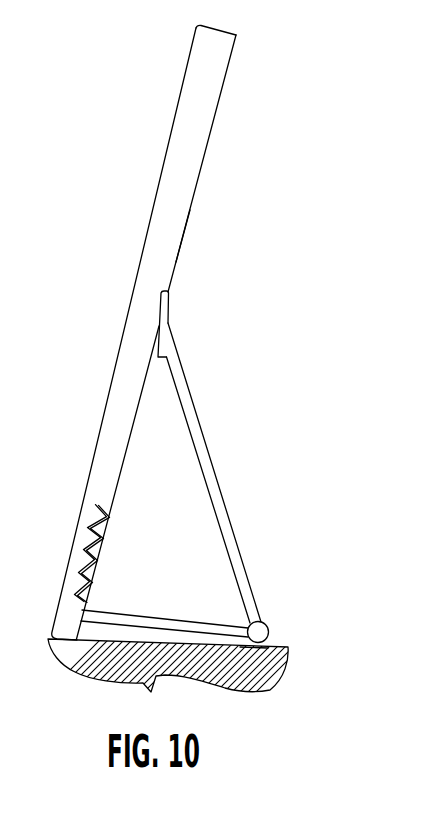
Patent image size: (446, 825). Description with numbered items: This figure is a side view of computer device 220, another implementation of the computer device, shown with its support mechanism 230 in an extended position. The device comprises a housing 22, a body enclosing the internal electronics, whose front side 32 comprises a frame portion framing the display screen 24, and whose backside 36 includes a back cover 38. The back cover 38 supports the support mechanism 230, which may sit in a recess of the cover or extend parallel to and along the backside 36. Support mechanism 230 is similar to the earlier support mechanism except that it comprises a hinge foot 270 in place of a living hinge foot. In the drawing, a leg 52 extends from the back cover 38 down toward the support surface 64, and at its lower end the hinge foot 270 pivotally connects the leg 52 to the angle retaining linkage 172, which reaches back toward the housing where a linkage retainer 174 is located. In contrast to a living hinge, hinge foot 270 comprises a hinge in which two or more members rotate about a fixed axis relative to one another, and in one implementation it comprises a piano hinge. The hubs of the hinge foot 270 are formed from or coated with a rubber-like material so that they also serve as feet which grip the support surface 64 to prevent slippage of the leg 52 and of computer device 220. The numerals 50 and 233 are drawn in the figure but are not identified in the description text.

The computer device 220 is at (118, 64).
The front side 32 is at (161, 82).
The housing 22 is at (236, 36).
The display screen 24 is at (152, 176).
The backside 36 is at (229, 112).
The back cover 38 is at (183, 246).
The hinge bracket 50 is at (168, 307).
The leg 52 is at (219, 487).
The support mechanism 230 is at (204, 357).
The linkage retainer 174 is at (105, 528).
The angle retaining linkage 172 is at (137, 625).
The pivot roller 233 is at (262, 621).
The support surface 64 is at (285, 663).
The hinge foot 270 is at (253, 657).